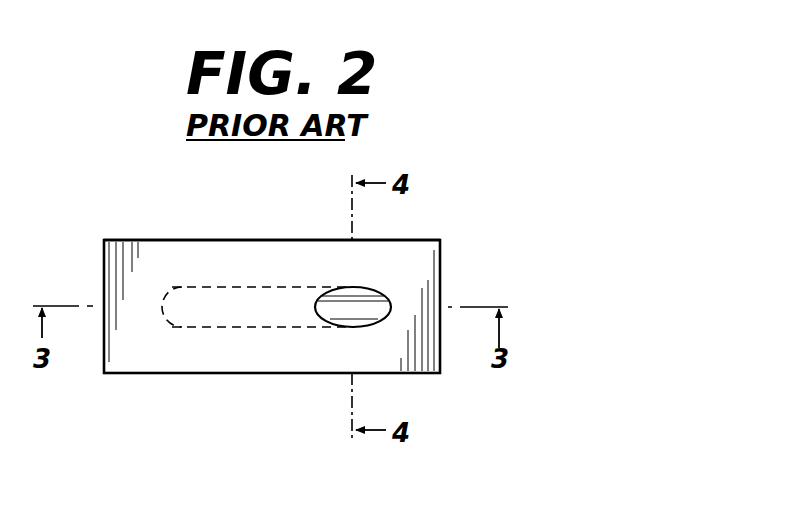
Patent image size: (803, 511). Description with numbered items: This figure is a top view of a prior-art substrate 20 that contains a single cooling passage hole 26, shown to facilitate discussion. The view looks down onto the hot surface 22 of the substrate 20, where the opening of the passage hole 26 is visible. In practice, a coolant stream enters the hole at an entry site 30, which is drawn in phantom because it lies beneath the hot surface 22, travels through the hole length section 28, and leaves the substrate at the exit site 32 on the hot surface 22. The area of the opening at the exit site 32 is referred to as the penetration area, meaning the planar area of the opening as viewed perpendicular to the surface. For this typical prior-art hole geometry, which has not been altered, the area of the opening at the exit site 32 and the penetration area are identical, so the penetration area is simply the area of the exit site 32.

The substrate 20 is at (130, 211).
The hot surface 22 is at (415, 257).
The passage hole 26 is at (343, 286).
The hole length section 28 is at (262, 313).
The entry site 30 is at (185, 313).
The exit site 32 is at (372, 300).